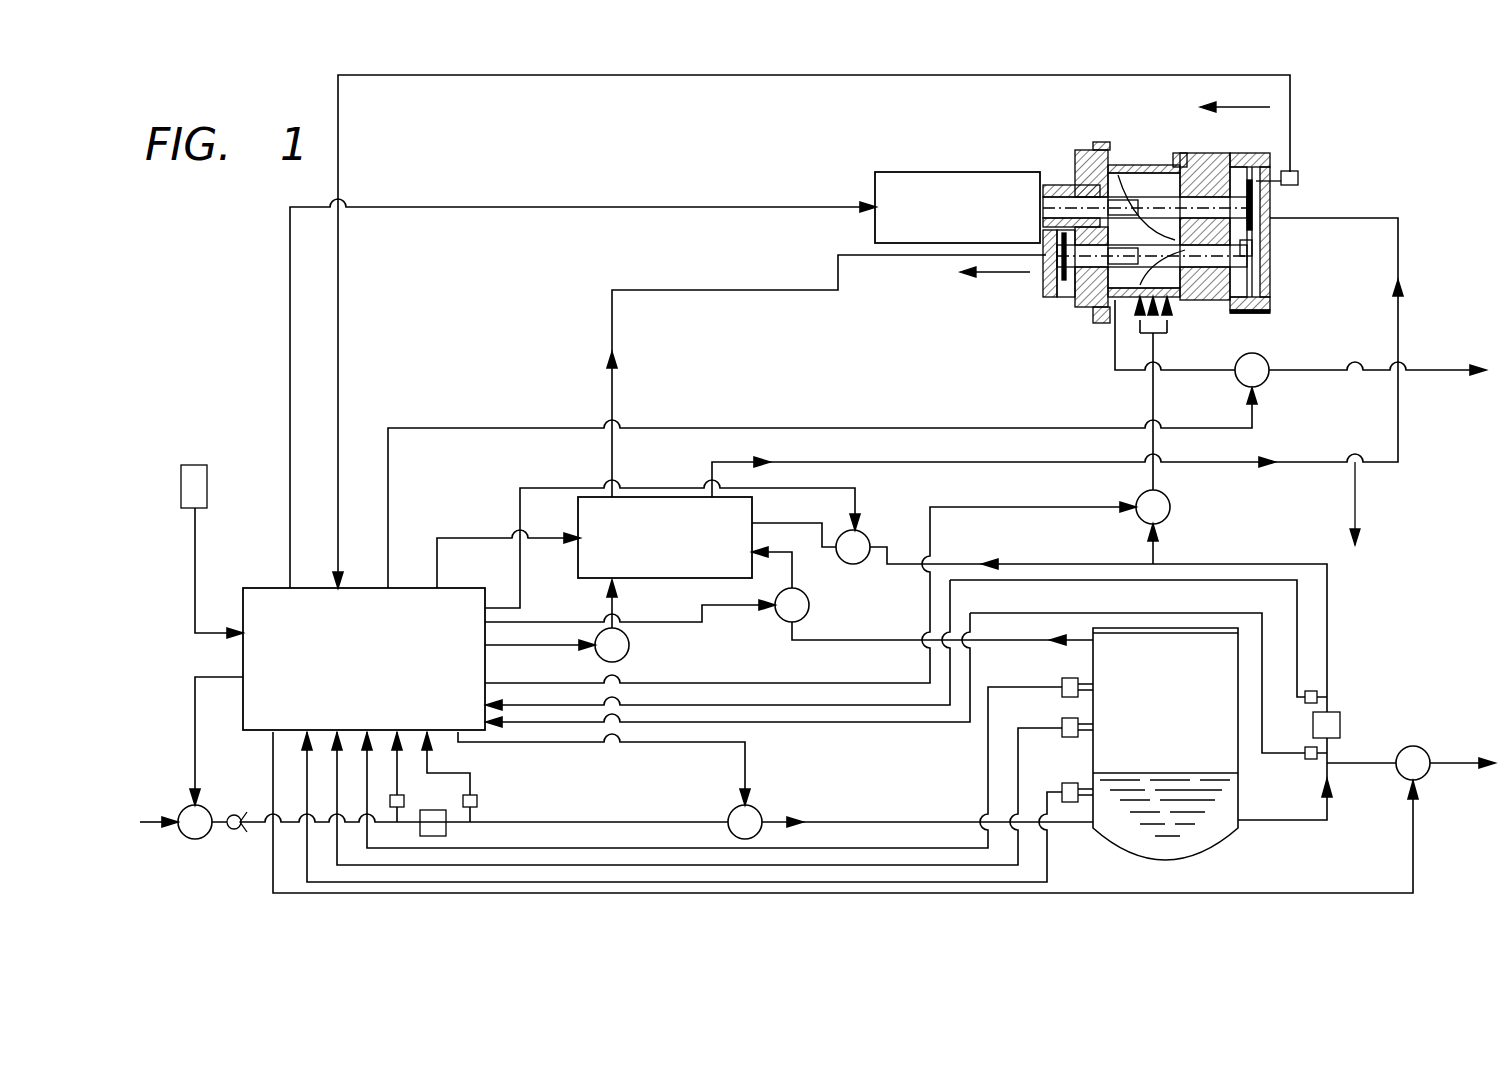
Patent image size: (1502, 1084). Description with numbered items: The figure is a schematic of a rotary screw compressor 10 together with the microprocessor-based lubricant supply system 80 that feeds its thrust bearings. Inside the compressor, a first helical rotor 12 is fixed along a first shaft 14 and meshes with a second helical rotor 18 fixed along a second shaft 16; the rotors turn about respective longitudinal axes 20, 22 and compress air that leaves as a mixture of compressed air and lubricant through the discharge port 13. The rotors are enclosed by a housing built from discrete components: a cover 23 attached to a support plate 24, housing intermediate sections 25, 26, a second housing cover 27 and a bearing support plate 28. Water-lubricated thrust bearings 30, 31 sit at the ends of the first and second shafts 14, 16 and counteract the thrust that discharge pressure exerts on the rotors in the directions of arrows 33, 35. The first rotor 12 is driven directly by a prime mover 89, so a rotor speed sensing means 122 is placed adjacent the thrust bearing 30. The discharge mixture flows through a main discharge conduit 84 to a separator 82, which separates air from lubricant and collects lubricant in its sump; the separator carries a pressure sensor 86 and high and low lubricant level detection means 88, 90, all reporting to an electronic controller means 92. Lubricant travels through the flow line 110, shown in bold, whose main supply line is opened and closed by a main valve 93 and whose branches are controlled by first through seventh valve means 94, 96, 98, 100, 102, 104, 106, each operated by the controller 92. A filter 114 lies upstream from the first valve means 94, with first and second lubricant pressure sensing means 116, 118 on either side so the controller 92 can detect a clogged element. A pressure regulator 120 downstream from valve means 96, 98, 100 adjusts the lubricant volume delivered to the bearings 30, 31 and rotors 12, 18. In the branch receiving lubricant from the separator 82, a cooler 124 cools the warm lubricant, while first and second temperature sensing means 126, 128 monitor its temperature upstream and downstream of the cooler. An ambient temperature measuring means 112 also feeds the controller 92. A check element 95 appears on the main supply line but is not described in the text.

The rotary screw compressor 10 is at (952, 136).
The first helical rotor 12 is at (1085, 185).
The discharge port 13 is at (1122, 185).
The first shaft 14 is at (1248, 210).
The second shaft 16 is at (1262, 242).
The second helical rotor 18 is at (1185, 300).
The longitudinal axis 20 is at (1200, 195).
The longitudinal axis 22 is at (1262, 278).
The cover 23 is at (1262, 300).
The support plate 24 is at (1255, 315).
The housing intermediate section 25 is at (1212, 305).
The housing intermediate section 26 is at (1148, 168).
The second housing cover 27 is at (1095, 325).
The bearing support plate 28 is at (1050, 300).
The thrust bearing 30 is at (1262, 213).
The thrust bearing 31 is at (1025, 298).
The arrow 33 is at (1252, 107).
The arrow 35 is at (1005, 275).
The lubricant supply system 80 is at (608, 910).
The separator 82 is at (1185, 845).
The main discharge conduit 84 is at (1360, 598).
The pressure sensor 86 is at (1070, 684).
The high lubricant level detection means 88 is at (1070, 724).
The prime mover 89 is at (905, 180).
The low lubricant level detection means 90 is at (1070, 790).
The electronic controller means 92 is at (277, 600).
The main valve 93 is at (200, 835).
The first valve means 94 is at (762, 815).
The check valve 95 is at (240, 835).
The second valve means 96 is at (620, 650).
The third valve means 98 is at (795, 612).
The fourth valve means 100 is at (853, 558).
The fifth valve means 102 is at (1162, 515).
The sixth valve means 104 is at (1258, 377).
The seventh valve means 106 is at (1420, 752).
The lubricant flow line 110 is at (706, 290).
The ambient temperature measuring means 112 is at (195, 465).
The filter 114 is at (445, 826).
The first lubricant pressure sensing means 116 is at (400, 800).
The second lubricant pressure sensing means 118 is at (477, 800).
The pressure regulator 120 is at (580, 562).
The rotor speed sensing means 122 is at (1300, 180).
The cooler 124 is at (1335, 725).
The first temperature sensing means 126 is at (1305, 703).
The second temperature sensing means 128 is at (1305, 762).